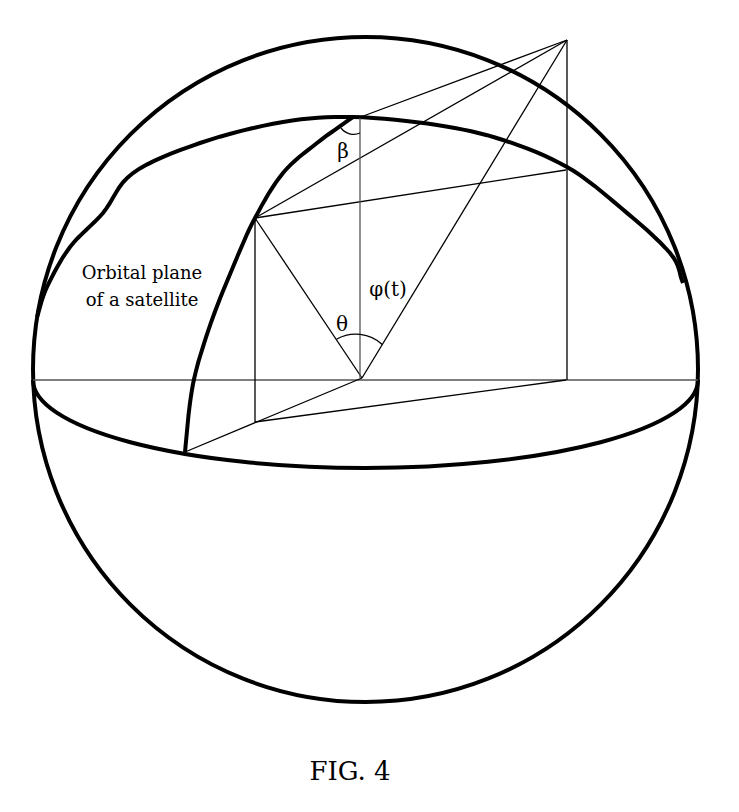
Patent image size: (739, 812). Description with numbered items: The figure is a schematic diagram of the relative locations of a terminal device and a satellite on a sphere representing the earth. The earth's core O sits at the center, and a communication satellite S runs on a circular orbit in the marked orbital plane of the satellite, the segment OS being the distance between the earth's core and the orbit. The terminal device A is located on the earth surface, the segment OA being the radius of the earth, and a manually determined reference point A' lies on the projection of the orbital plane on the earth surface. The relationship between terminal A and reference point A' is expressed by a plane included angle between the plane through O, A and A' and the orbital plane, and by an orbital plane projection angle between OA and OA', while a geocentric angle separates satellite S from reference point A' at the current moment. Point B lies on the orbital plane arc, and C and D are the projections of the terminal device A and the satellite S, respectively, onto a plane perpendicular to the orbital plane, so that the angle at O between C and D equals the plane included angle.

The communication satellite S is at (421, 199).
The terminal device A is at (395, 296).
The reference point A' is at (356, 234).
The point B on orbital plane B is at (585, 160).
The earth's core O is at (360, 372).
The projection of the terminal device C is at (375, 418).
The projection of the satellite D is at (578, 404).